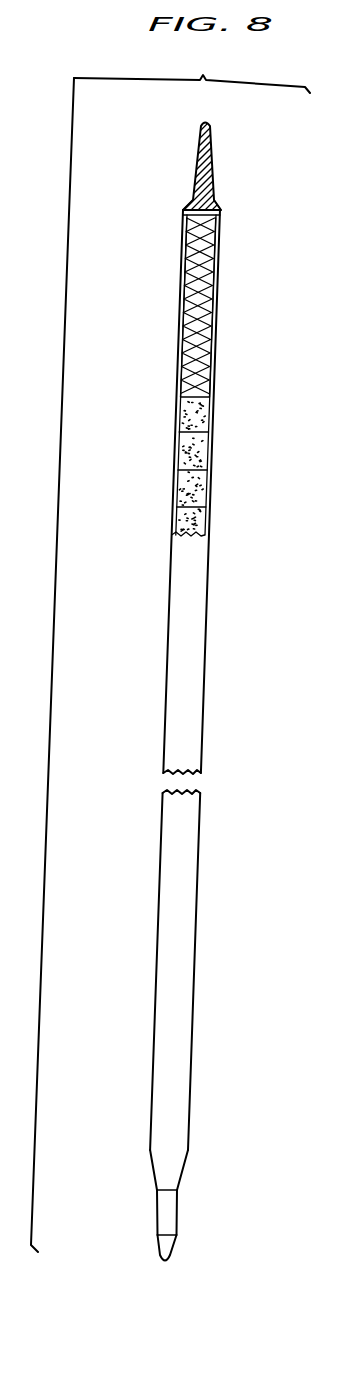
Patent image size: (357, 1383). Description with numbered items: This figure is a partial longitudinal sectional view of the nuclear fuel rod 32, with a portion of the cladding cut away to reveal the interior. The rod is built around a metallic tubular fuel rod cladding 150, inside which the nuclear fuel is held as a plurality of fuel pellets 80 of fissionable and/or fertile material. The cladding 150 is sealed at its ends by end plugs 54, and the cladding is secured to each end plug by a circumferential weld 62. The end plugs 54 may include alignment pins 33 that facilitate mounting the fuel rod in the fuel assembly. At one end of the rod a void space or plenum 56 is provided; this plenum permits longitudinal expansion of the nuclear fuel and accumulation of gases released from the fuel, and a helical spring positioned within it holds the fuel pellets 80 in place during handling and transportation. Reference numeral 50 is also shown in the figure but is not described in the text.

The nuclear fuel rod 32 is at (208, 713).
The alignment pin 33 is at (215, 160).
The end plug 54 is at (217, 200).
The circumferential weld 62 is at (185, 208).
The inner tube wall 50 is at (184, 297).
The plenum 56 is at (218, 290).
The fuel pellet 80 is at (186, 460).
The metallic tubular fuel rod cladding 150 is at (208, 456).